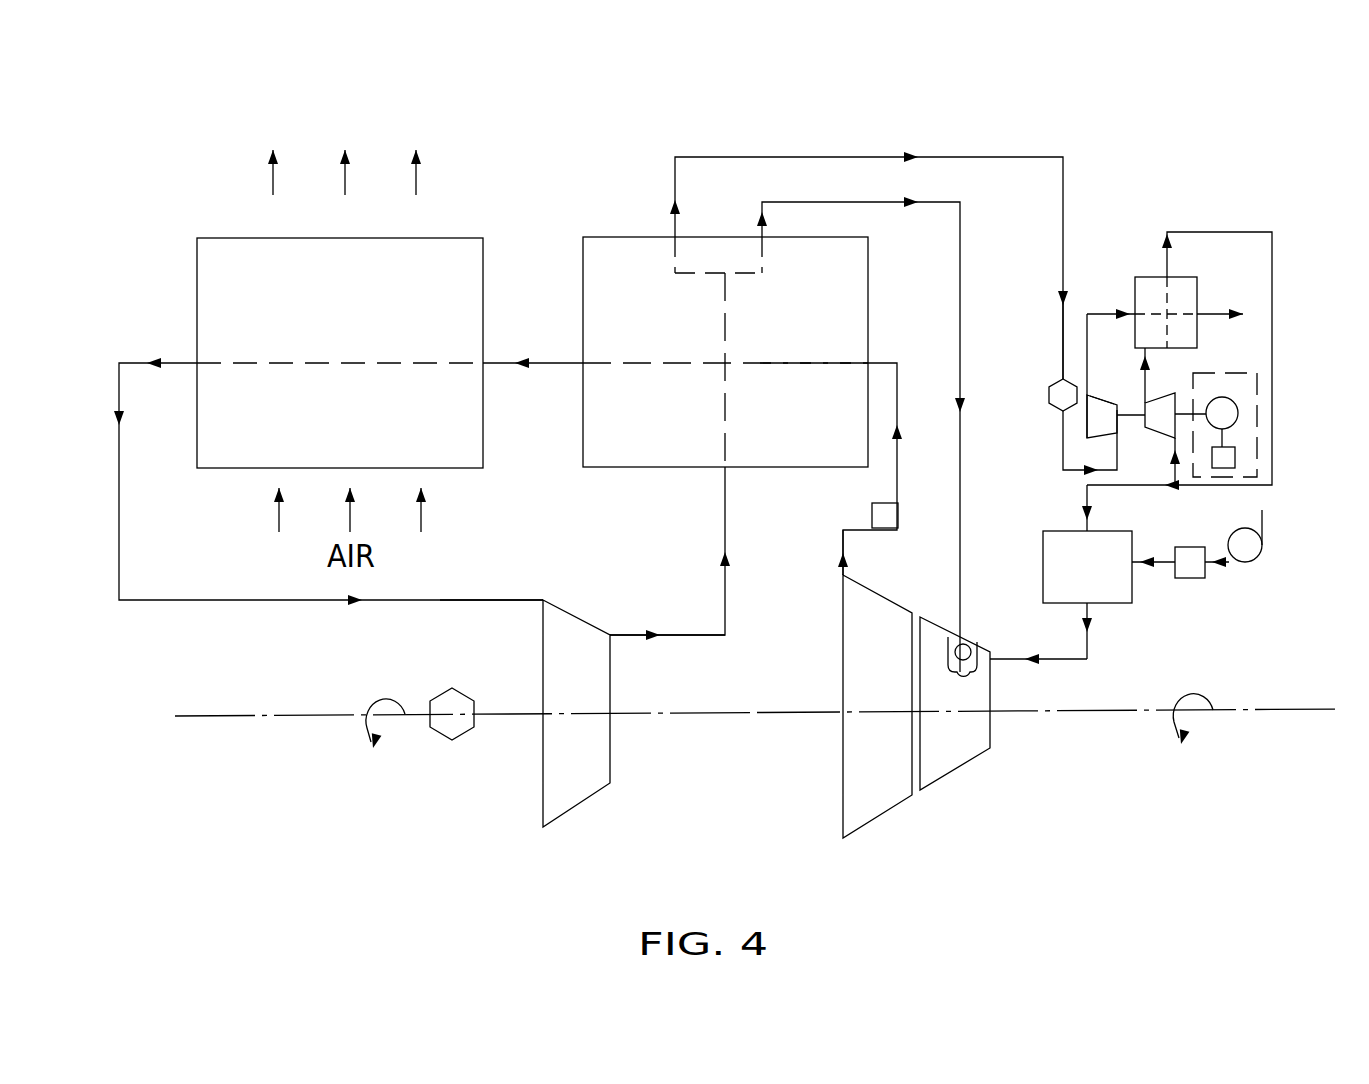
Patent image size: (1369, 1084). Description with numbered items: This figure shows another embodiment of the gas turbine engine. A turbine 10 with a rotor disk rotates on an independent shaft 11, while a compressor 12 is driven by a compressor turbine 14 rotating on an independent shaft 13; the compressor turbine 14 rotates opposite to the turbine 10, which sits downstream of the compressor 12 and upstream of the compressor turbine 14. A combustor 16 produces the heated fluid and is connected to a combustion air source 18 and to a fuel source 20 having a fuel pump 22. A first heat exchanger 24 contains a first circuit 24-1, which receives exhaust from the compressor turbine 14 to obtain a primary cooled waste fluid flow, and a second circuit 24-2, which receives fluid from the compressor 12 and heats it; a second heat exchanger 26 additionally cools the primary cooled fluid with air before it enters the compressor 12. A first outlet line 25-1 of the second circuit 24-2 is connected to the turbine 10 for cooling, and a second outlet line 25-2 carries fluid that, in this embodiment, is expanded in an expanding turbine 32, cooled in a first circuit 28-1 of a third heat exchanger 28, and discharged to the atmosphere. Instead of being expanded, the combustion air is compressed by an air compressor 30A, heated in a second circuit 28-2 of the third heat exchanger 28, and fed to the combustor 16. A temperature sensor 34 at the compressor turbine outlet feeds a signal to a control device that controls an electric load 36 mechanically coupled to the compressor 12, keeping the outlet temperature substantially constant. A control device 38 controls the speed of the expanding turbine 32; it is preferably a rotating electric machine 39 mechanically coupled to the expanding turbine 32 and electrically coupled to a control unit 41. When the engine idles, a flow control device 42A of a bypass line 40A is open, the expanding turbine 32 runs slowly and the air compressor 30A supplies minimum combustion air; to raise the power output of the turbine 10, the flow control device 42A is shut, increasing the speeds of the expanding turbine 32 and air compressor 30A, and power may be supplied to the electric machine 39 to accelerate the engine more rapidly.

The turbine 10 is at (958, 770).
The independent shaft 11 is at (1068, 714).
The compressor 12 is at (577, 812).
The independent shaft 13 is at (712, 718).
The compressor turbine 14 is at (885, 815).
The combustor (heated fluid source) 16 is at (1105, 603).
The combustion air source 18 is at (1104, 335).
The fuel source 20 is at (1222, 585).
The fuel pump 22 is at (1262, 545).
The first heat exchanger 24 is at (665, 434).
The first circuit of first heat exchanger 24-1 is at (824, 365).
The second circuit of first heat exchanger 24-2 is at (723, 323).
The first outlet line of second circuit 25-1 is at (913, 222).
The second outlet line of second circuit 25-2 is at (935, 140).
The second heat exchanger 26 is at (357, 351).
The third heat exchanger 28 is at (1176, 287).
The first circuit of third heat exchanger 28-1 is at (1172, 313).
The second circuit of third heat exchanger 28-2 is at (1170, 288).
The air compressor 30A is at (1153, 422).
The expanding turbine 32 is at (1087, 417).
The temperature sensor 34 is at (872, 510).
The electric load 36 is at (437, 735).
The control device 38 is at (1265, 368).
The rotating electric machine 39 is at (1238, 412).
The bypass line 40A is at (1075, 368).
The control unit 41 is at (1235, 458).
The flow control device 42A is at (1052, 386).